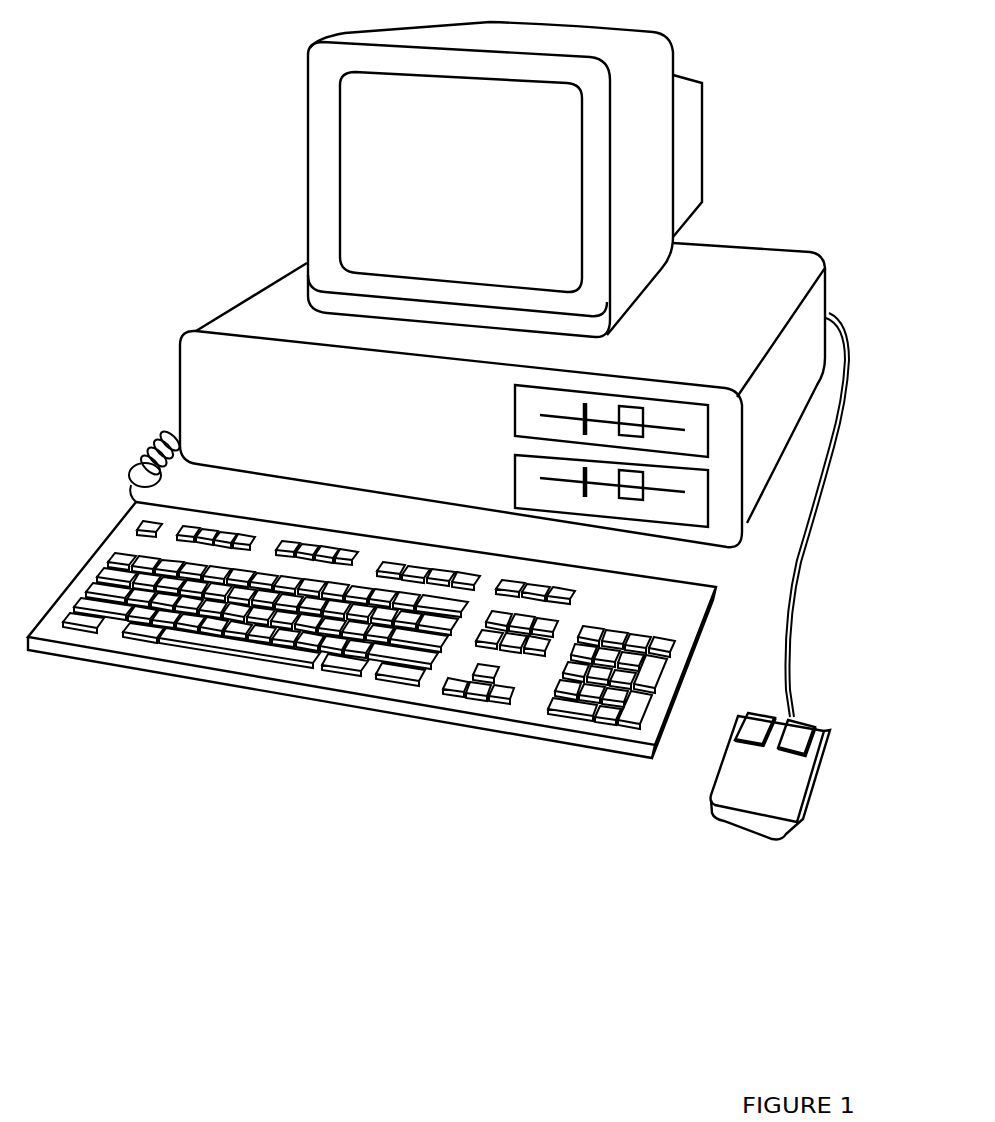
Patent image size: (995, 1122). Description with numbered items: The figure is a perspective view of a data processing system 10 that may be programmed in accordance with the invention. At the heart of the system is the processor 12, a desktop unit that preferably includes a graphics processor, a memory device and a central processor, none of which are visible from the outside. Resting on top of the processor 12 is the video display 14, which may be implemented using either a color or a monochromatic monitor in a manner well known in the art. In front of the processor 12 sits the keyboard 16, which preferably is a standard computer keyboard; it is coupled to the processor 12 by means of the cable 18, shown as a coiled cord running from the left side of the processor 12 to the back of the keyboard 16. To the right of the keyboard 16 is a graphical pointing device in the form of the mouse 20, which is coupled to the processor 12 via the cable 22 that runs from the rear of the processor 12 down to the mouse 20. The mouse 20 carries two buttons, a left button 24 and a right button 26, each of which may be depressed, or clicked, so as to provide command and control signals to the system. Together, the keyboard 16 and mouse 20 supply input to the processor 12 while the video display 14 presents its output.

The data processing system 10 is at (232, 182).
The processor 12 is at (746, 518).
The video display 14 is at (697, 118).
The keyboard 16 is at (198, 656).
The cable 18 is at (136, 446).
The mouse 20 is at (798, 828).
The cable 22 is at (788, 655).
The left button 24 is at (748, 722).
The right button 26 is at (802, 733).